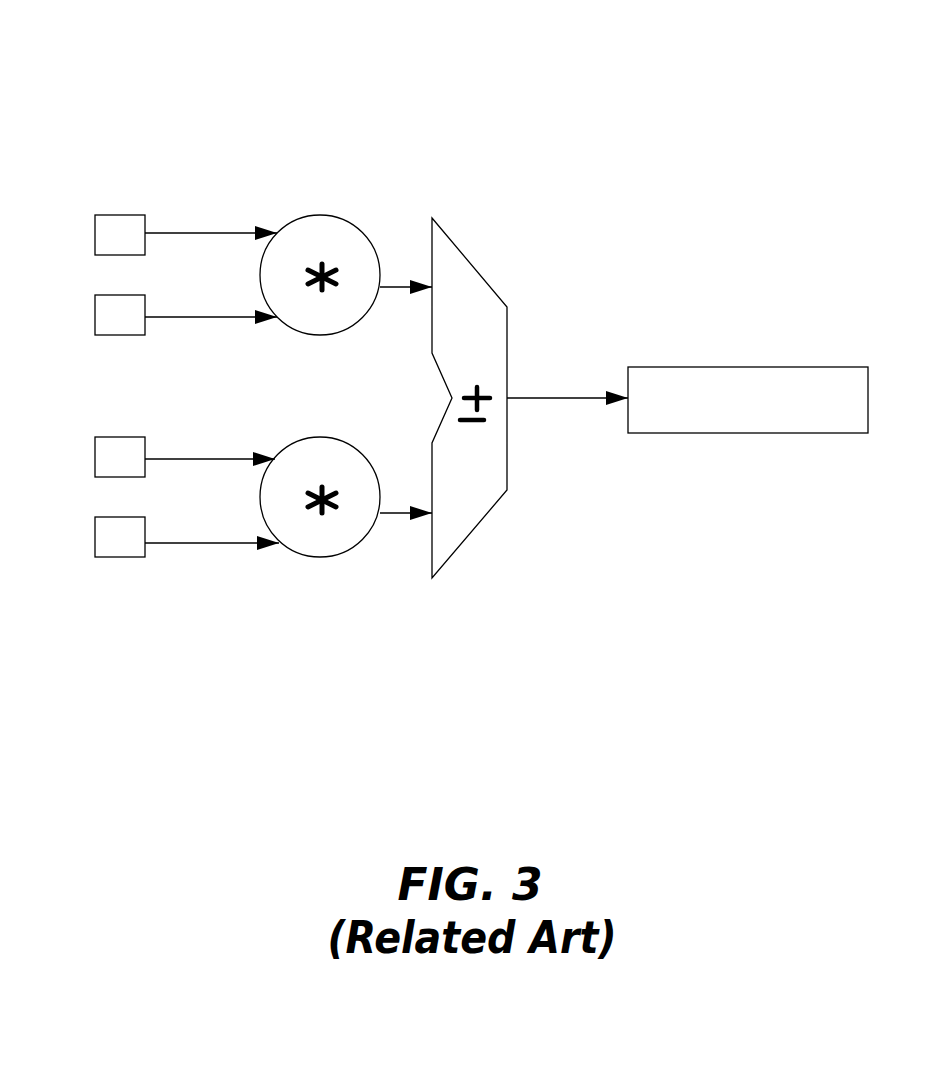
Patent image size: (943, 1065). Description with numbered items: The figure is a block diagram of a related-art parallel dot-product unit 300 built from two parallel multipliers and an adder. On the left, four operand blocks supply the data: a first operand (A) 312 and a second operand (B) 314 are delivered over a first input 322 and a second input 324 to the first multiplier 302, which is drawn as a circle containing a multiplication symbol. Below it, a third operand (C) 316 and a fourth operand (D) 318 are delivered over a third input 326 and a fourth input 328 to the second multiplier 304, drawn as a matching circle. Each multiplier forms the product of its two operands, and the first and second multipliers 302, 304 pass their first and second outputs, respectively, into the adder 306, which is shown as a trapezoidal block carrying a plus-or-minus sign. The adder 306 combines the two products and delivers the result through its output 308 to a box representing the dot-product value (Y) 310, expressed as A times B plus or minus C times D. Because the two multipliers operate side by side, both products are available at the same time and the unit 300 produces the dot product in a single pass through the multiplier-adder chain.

The parallel dot-product unit 300 is at (134, 44).
The first multiplier 302 is at (325, 217).
The second multiplier 304 is at (325, 439).
The adder 306 is at (468, 260).
The output 308 is at (586, 398).
The dot-product value 310 is at (700, 367).
The first operand 312 is at (95, 215).
The second operand 314 is at (95, 295).
The third operand 316 is at (95, 437).
The fourth operand 318 is at (95, 517).
The first input 322 is at (240, 233).
The second input 324 is at (240, 317).
The third input 326 is at (240, 459).
The fourth input 328 is at (240, 543).